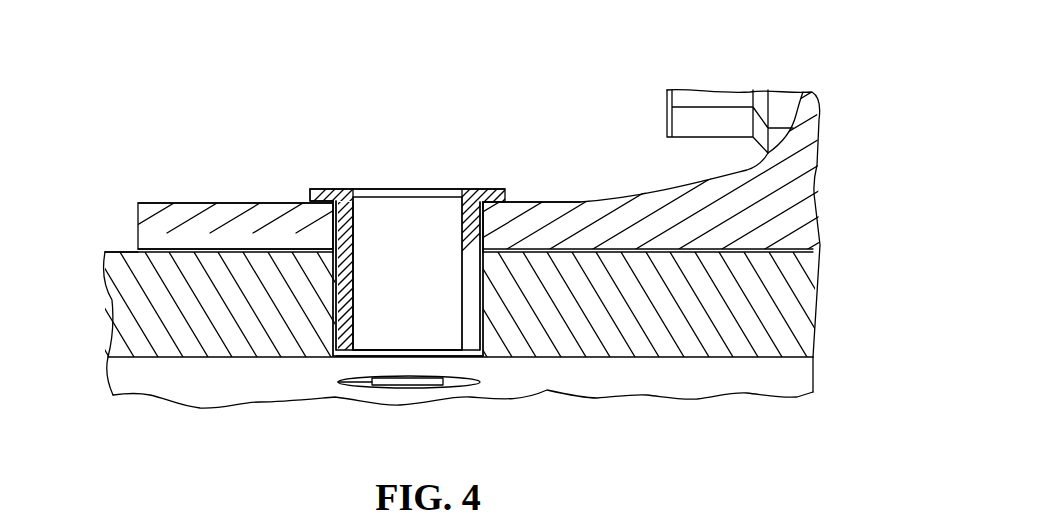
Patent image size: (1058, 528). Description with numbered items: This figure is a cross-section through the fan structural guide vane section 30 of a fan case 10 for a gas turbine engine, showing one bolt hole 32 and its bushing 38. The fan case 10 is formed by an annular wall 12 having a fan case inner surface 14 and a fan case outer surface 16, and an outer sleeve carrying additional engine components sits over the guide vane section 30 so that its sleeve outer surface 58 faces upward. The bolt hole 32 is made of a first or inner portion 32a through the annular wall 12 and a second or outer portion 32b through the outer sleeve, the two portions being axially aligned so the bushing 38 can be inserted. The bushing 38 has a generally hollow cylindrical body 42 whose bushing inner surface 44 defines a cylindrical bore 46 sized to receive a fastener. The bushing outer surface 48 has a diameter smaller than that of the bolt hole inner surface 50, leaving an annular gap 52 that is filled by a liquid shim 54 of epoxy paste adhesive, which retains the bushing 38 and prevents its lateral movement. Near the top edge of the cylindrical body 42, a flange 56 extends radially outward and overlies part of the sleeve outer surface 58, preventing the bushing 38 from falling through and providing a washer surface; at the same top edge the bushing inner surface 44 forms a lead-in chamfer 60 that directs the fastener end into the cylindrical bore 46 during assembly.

The fan case 10 is at (522, 72).
The fan structural guide vane section 30 is at (387, 115).
The annular wall 12 is at (145, 327).
The fan case inner surface 14 is at (193, 357).
The fan case outer surface 16 is at (125, 248).
The bolt hole 32 is at (453, 380).
The first or inner bolt hole portion 32a is at (482, 302).
The second or outer bolt hole portion 32b is at (503, 207).
The bushing 38 is at (417, 190).
The cylindrical body 42 is at (375, 212).
The bushing inner surface 44 is at (458, 208).
The cylindrical bore 46 is at (397, 232).
The bushing outer surface 48 is at (333, 313).
The bolt hole inner surface 50 is at (338, 381).
The annular gap 52 is at (348, 227).
The liquid shim 54 is at (357, 247).
The flange 56 is at (309, 200).
The sleeve outer surface 58 is at (208, 202).
The lead-in chamfer 60 is at (350, 198).